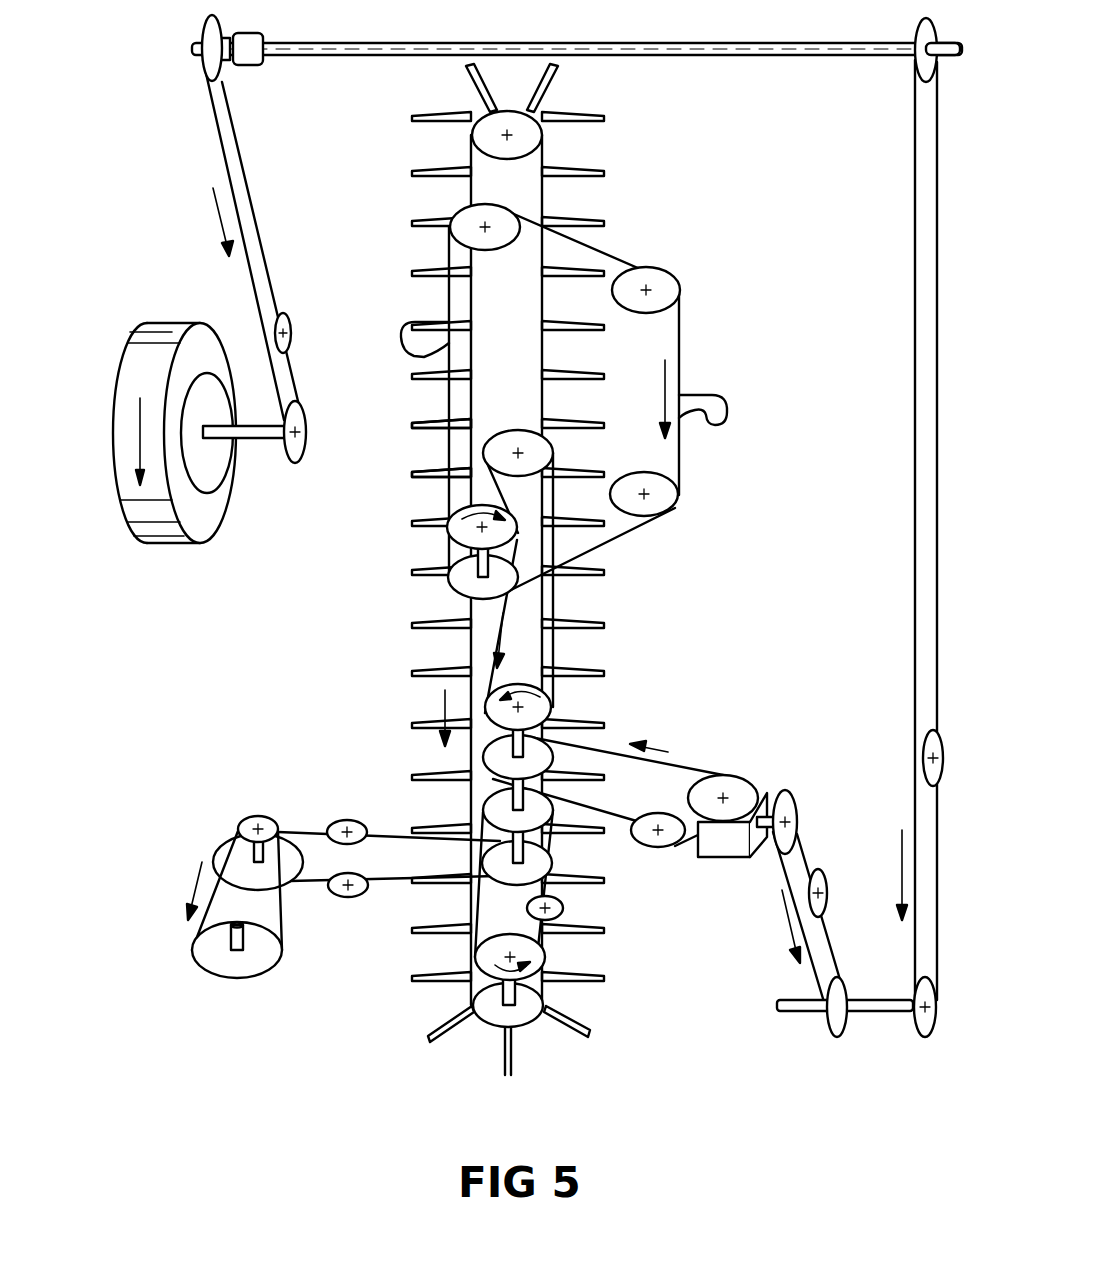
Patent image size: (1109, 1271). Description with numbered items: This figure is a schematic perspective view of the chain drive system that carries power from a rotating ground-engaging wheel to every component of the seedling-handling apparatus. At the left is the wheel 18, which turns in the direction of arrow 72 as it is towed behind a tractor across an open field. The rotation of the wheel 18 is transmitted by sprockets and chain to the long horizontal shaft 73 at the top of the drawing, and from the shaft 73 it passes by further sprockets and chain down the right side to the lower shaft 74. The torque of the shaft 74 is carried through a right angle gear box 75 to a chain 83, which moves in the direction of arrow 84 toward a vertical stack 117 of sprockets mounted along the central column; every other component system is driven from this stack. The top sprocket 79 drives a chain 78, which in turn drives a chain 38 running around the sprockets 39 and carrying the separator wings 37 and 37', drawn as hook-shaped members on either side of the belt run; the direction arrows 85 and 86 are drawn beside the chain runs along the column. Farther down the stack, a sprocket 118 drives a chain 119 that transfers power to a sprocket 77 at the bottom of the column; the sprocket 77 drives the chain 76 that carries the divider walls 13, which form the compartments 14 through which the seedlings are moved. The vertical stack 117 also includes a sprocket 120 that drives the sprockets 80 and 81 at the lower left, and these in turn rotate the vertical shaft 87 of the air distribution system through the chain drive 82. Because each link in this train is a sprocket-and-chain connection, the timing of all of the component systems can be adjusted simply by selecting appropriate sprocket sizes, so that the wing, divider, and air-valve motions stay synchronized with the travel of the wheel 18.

The shaft 73 is at (392, 47).
The wheel 18 is at (130, 368).
The arrow 72 is at (135, 434).
The chain 76 is at (472, 330).
The divider walls 13 is at (590, 222).
The compartments 14 is at (425, 445).
The separator wing 37' is at (396, 353).
The separator wing 37 is at (715, 397).
The chain 38 is at (625, 252).
The belt pulleys 39 is at (468, 222).
The chain 78 is at (558, 600).
The top sprocket 79 is at (503, 442).
The belt 85 is at (493, 636).
The belt 86 is at (442, 706).
The arrow 84 is at (668, 758).
The chain 83 is at (716, 777).
The right angle gear box 75 is at (730, 846).
The shaft 74 is at (882, 1012).
The vertical stack of sprockets 117 is at (502, 738).
The sprocket 118 is at (500, 810).
The sprocket 120 is at (548, 857).
The chain 119 is at (525, 930).
The sprocket 77 is at (520, 1020).
The sprocket 81 is at (238, 855).
The chain drive 82 is at (288, 905).
The shaft 87 is at (225, 940).
The sprocket 80 is at (228, 968).